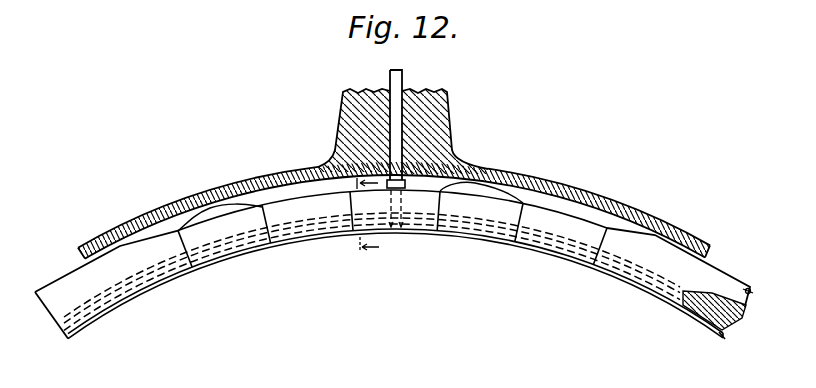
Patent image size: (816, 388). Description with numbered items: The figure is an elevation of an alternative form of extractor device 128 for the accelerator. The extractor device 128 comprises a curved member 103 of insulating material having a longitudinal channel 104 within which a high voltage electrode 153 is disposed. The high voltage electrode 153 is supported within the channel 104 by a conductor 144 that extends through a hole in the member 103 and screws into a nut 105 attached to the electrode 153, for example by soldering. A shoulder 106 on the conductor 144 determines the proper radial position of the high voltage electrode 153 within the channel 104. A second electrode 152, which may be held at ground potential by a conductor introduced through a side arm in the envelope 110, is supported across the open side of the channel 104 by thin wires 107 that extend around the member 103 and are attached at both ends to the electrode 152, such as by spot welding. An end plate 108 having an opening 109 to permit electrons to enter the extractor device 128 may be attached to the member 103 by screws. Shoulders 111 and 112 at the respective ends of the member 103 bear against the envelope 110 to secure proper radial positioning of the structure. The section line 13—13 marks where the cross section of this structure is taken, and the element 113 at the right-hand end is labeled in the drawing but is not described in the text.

The envelope 110 is at (213, 189).
The conductor 144 is at (402, 80).
The shoulder 106 is at (405, 183).
The section line 13 is at (372, 217).
The nut 105 is at (401, 229).
The curved member 103 is at (574, 216).
The thin wires 107 is at (197, 222).
The electrode 152 is at (547, 249).
The high voltage electrode 153 is at (308, 242).
The shoulder 111 is at (47, 285).
The longitudinal channel 104 is at (64, 337).
The shoulder 112 is at (727, 274).
The end plate 108 is at (752, 290).
The wedge 113 is at (748, 307).
The opening 109 is at (721, 334).
The extractor device 128 is at (411, 283).